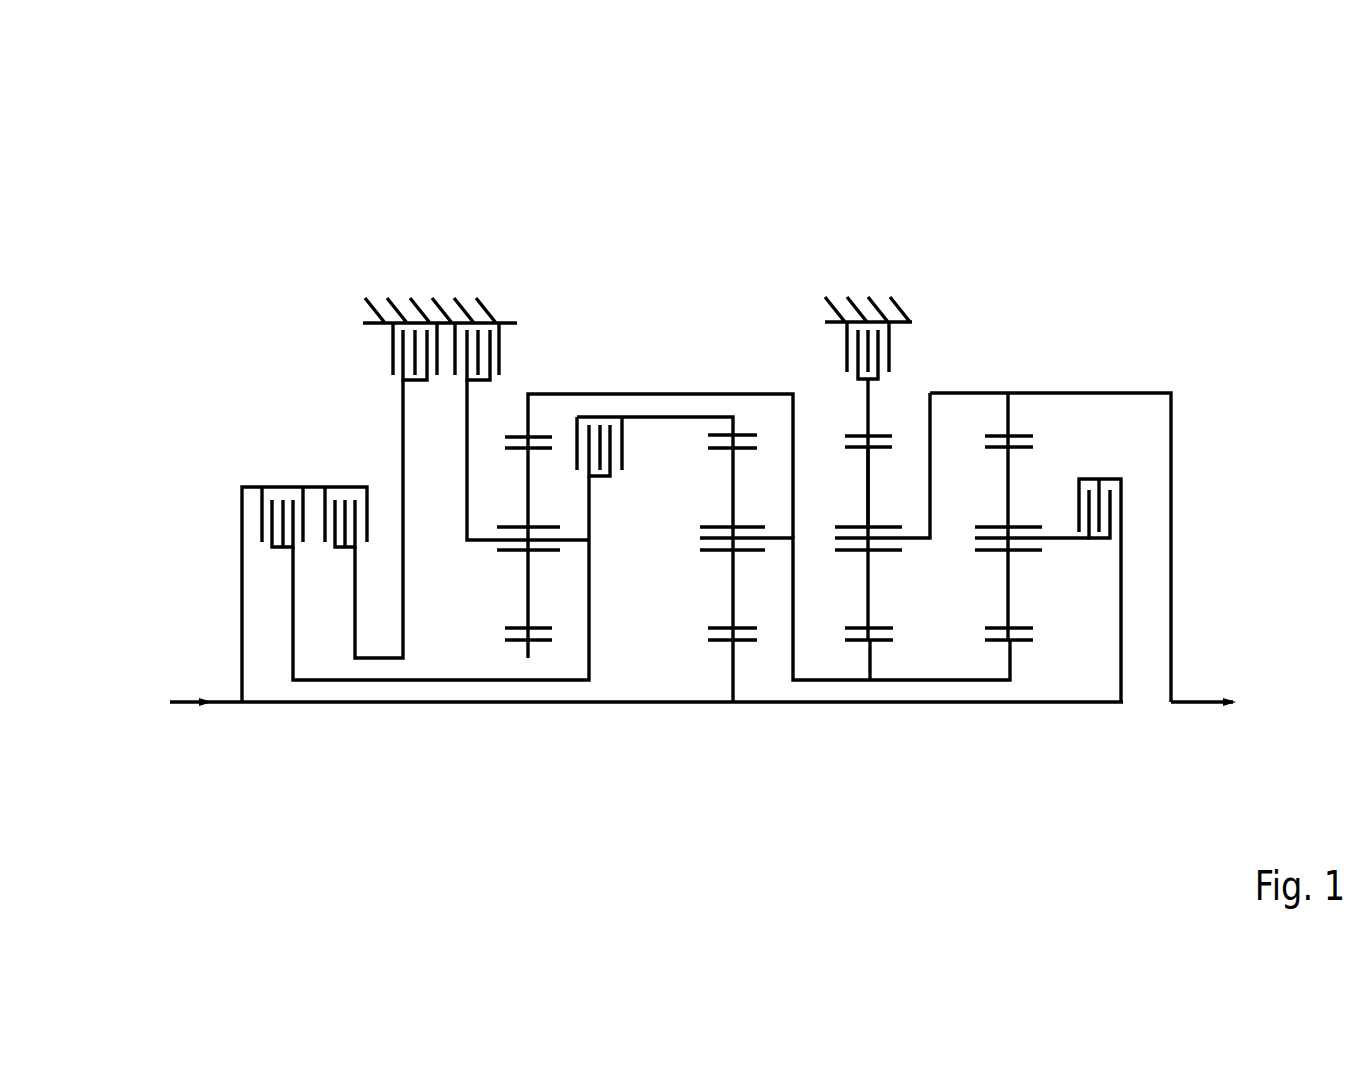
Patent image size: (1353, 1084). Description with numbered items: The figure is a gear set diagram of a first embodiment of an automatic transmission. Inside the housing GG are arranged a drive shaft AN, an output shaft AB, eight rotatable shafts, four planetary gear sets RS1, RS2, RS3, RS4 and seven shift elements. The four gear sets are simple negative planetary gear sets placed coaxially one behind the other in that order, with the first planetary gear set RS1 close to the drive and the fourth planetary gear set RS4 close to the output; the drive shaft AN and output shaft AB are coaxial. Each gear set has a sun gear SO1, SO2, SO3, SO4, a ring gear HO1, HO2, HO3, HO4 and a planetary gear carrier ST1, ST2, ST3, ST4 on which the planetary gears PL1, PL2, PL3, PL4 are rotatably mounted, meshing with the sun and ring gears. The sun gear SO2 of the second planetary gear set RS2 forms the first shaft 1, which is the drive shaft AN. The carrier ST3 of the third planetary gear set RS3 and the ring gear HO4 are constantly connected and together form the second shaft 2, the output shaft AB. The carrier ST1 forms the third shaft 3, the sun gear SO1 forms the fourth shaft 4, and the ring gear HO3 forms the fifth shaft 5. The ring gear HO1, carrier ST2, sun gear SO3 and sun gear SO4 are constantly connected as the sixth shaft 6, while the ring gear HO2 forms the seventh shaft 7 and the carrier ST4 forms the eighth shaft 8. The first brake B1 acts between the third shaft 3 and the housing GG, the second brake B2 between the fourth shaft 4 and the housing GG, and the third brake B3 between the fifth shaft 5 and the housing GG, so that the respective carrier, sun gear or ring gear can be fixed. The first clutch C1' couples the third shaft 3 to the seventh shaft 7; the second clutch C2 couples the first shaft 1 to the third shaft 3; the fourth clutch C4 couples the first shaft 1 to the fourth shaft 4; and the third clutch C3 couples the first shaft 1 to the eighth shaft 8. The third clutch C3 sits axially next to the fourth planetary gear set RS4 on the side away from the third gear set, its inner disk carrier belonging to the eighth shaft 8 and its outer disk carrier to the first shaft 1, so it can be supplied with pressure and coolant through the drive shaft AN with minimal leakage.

The first shaft 1 is at (342, 707).
The second shaft 2 is at (1172, 510).
The third shaft 3 is at (441, 610).
The planetary gear carrier of the first planetary gear set ST1 is at (472, 538).
The fourth shaft 4 is at (436, 660).
The fifth shaft 5 is at (838, 310).
The ring gear of the third planetary gear set HO3 is at (868, 407).
The sixth shaft 6 is at (574, 392).
The seventh shaft 7 is at (638, 415).
The eighth shaft 8 is at (1163, 566).
The planetary gear carrier of the fourth planetary gear set ST4 is at (1057, 545).
The first brake B1 is at (507, 348).
The second brake B2 is at (383, 350).
The third brake B3 is at (897, 345).
The first clutch C1' is at (614, 629).
The second clutch C2 is at (283, 483).
The third clutch C3 is at (1111, 462).
The fourth clutch C4 is at (343, 482).
The housing GG is at (453, 308).
The ring gear of the first planetary gear set HO1 is at (506, 435).
The ring gear of the second planetary gear set HO2 is at (742, 435).
The ring gear of the fourth planetary gear set HO4 is at (993, 435).
The planetary gears of the first planetary gear set PL1 is at (530, 590).
The planetary gears of the second planetary gear set PL2 is at (728, 487).
The planetary gears of the third planetary gear set PL3 is at (870, 480).
The planetary gears of the fourth planetary gear set PL4 is at (1013, 480).
The sun gear of the first planetary gear set SO1 is at (540, 643).
The sun gear of the second planetary gear set SO2 is at (742, 640).
The sun gear of the third planetary gear set SO3 is at (880, 643).
The sun gear of the fourth planetary gear set SO4 is at (1017, 642).
The planetary gear carrier of the second planetary gear set ST2 is at (780, 538).
The planetary gear carrier of the third planetary gear set ST3 is at (913, 540).
The first planetary gear set RS1 is at (507, 567).
The second planetary gear set RS2 is at (698, 563).
The third planetary gear set RS3 is at (837, 563).
The fourth planetary gear set RS4 is at (982, 563).
The drive shaft AN is at (186, 683).
The output shaft AB is at (1203, 682).